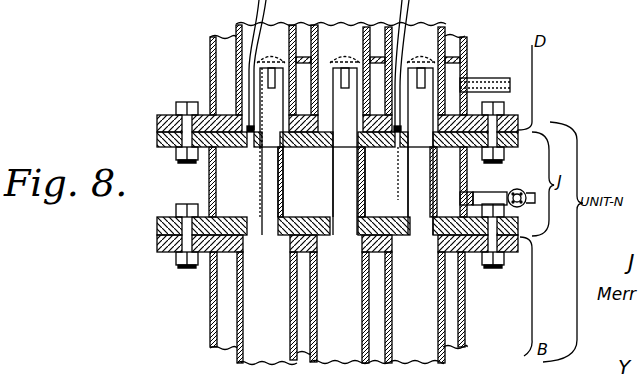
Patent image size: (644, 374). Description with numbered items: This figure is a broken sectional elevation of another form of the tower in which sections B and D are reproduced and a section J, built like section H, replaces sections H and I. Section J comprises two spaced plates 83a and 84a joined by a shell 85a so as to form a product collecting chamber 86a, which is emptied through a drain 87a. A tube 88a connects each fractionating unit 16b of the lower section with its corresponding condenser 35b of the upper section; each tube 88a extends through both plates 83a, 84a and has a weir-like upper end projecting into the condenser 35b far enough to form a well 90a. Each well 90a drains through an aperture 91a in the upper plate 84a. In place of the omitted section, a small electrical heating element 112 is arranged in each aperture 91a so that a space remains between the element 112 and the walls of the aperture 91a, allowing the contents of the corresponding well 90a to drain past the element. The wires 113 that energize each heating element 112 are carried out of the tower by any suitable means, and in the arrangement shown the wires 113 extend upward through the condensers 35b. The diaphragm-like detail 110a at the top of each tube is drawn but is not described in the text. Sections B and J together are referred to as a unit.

The wires 113 is at (265, 16).
The diaphragm 110a is at (346, 48).
The condenser 35b is at (450, 34).
The well 90a is at (443, 85).
The plate 84a is at (163, 138).
The shell 85a is at (207, 165).
The product collecting chamber 86a is at (218, 184).
The electrical heating element 112 is at (252, 147).
The aperture 91a is at (310, 153).
The tube 88a is at (262, 203).
The drain 87a is at (498, 192).
The plate 83a is at (157, 232).
The fractionating unit 16b is at (447, 312).